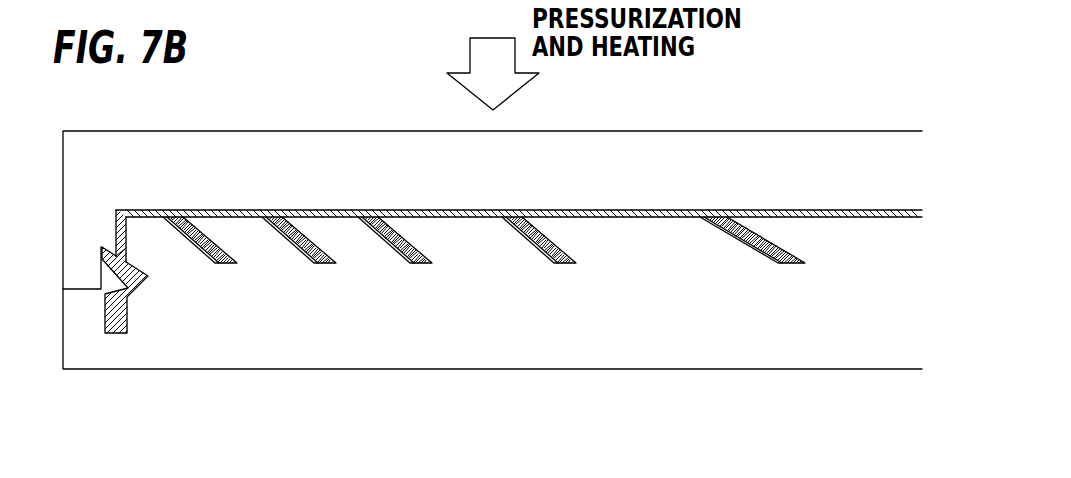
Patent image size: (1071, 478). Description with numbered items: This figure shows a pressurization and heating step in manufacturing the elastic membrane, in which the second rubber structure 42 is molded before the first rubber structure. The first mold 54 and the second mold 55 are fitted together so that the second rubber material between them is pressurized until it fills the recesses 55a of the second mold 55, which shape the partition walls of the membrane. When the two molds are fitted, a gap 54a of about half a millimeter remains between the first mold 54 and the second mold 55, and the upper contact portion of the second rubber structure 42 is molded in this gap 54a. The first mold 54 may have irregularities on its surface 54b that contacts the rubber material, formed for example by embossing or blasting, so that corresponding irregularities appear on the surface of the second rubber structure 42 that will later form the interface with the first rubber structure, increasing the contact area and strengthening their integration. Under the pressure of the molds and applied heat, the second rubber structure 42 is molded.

The second rubber structure 42 is at (285, 213).
The first mold 54 is at (262, 155).
The gap 54a is at (345, 212).
The surface 54b is at (119, 233).
The second mold 55 is at (282, 348).
The recesses 55a is at (115, 330).